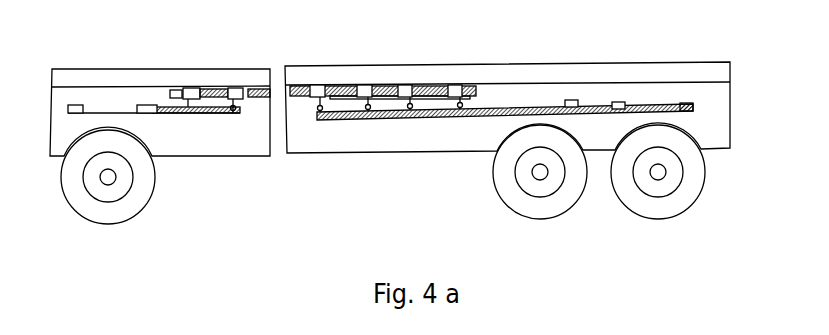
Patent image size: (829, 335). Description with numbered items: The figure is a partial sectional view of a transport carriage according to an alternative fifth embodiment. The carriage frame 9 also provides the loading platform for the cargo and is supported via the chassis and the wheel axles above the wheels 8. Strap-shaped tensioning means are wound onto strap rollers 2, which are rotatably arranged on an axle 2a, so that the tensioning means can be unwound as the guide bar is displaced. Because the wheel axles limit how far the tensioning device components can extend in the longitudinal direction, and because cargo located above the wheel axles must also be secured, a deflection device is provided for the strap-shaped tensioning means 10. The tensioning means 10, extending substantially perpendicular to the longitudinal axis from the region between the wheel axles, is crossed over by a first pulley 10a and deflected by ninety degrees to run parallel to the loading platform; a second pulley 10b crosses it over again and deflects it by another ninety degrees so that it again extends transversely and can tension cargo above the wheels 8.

The strap roller 2 is at (240, 93).
The axle 2a is at (294, 86).
The wheel 8 is at (112, 208).
The carriage frame 9 is at (552, 75).
The strap-shaped tensioning means 10 is at (232, 90).
The first pulley 10a is at (240, 117).
The second pulley 10b is at (76, 105).